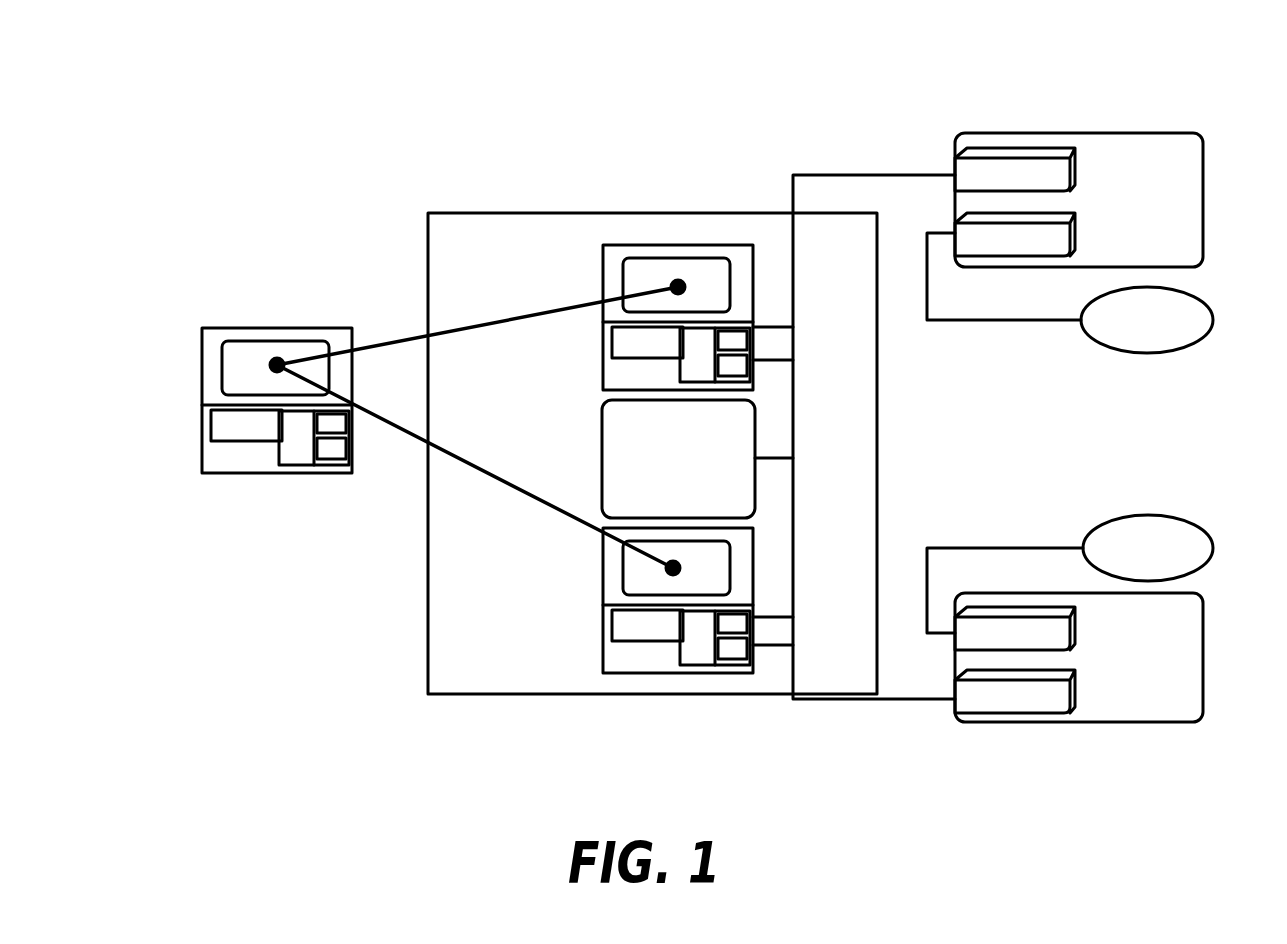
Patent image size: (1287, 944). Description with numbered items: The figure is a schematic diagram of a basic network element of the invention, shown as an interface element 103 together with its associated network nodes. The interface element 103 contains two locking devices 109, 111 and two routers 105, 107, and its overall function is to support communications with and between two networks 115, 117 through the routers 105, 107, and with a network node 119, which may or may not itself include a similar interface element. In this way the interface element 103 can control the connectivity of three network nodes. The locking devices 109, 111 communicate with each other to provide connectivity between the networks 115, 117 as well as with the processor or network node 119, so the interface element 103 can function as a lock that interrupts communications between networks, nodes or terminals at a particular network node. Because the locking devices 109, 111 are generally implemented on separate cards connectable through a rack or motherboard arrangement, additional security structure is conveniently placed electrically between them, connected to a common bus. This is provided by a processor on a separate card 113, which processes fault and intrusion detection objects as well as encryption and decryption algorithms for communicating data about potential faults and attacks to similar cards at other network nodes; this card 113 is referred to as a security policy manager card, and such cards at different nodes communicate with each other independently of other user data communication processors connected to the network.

The interface element 103 is at (427, 660).
The router 105 is at (1010, 140).
The router 107 is at (990, 703).
The locking device 109 is at (602, 262).
The locking device 111 is at (600, 573).
The security policy manager card 113 is at (755, 500).
The network 115 is at (1123, 540).
The network 117 is at (1147, 330).
The network node 119 is at (202, 442).